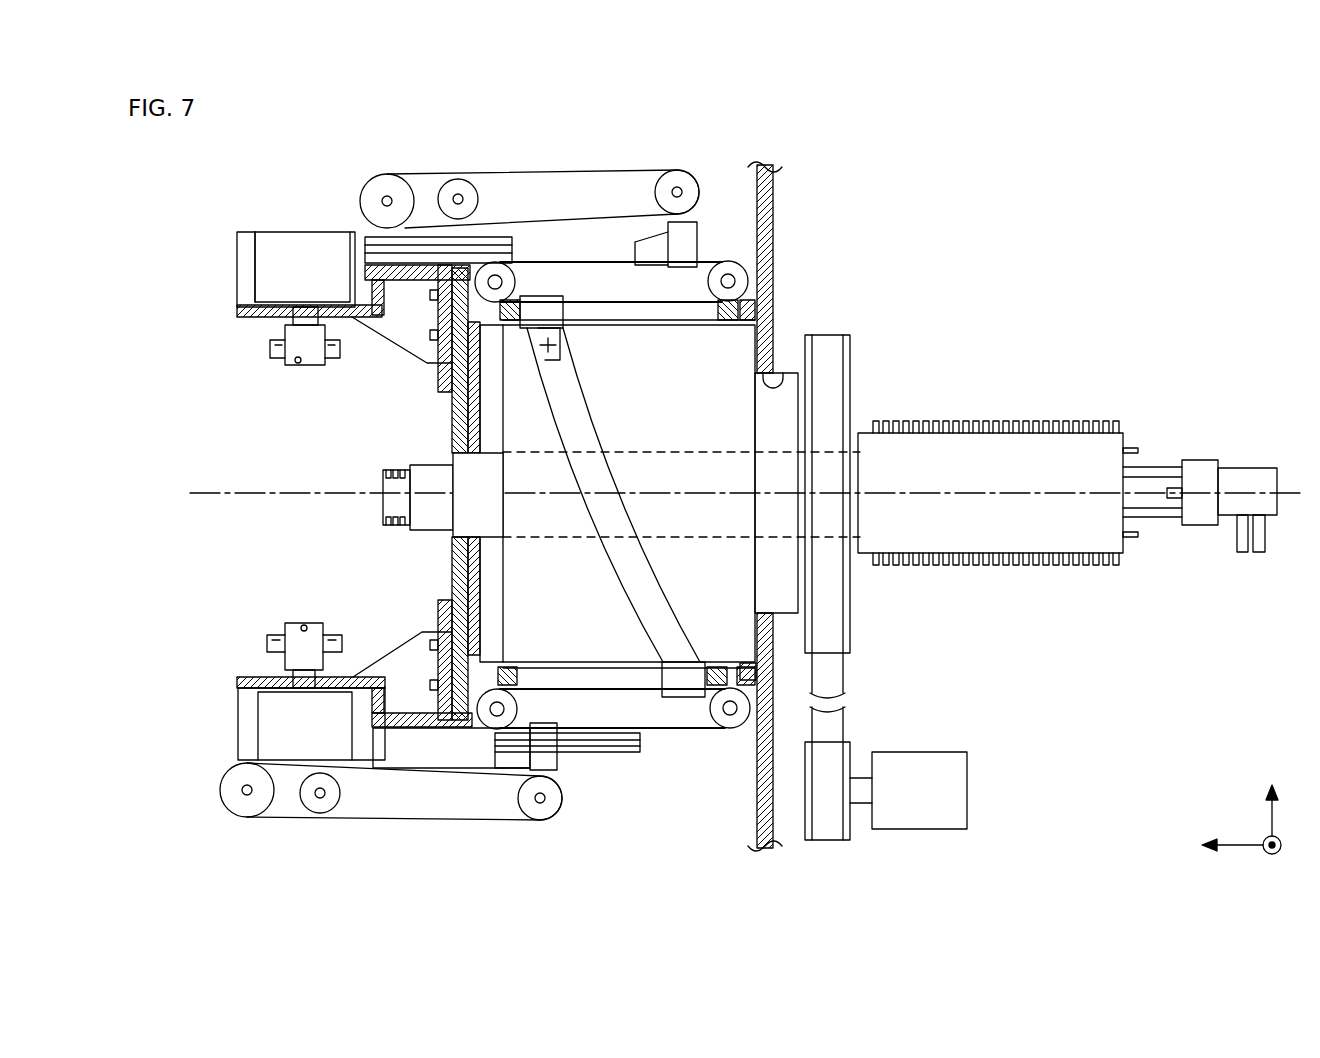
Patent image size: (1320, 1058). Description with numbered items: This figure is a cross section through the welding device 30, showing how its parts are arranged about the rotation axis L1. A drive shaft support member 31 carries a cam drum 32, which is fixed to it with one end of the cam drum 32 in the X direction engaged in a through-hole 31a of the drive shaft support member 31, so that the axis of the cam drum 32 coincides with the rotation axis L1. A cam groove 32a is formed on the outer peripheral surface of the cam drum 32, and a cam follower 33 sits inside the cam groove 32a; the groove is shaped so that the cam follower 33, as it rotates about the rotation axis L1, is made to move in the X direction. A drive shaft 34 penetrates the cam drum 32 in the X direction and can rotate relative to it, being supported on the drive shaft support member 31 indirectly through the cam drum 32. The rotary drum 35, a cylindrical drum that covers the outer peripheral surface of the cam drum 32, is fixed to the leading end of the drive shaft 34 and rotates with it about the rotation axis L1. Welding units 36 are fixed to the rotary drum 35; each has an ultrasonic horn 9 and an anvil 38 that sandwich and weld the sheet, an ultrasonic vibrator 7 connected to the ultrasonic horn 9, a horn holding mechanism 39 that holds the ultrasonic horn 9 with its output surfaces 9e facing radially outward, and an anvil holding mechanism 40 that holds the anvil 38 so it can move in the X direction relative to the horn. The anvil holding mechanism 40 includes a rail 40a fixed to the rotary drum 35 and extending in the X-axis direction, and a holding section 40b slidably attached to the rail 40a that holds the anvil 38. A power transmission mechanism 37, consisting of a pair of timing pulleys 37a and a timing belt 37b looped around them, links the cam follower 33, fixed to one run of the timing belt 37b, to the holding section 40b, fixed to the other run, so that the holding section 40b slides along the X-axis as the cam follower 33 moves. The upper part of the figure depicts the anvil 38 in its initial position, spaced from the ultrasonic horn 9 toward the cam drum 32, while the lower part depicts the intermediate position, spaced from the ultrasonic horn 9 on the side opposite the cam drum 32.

The welding device 30 is at (1118, 133).
The drive shaft support member 31 is at (778, 190).
The through-hole 31a is at (792, 376).
The cam drum 32 is at (735, 417).
The cam groove 32a is at (590, 372).
The cam follower 33 is at (547, 362).
The drive shaft 34 is at (636, 450).
The rotary drum 35 is at (415, 563).
The welding unit 36 is at (482, 133).
The power transmission mechanism 37 is at (742, 230).
The timing pulley 37a is at (507, 278).
The timing belt 37b is at (600, 300).
The anvil 38 is at (386, 172).
The horn holding mechanism 39 is at (226, 270).
The anvil holding mechanism 40 is at (692, 157).
The rail 40a is at (380, 247).
The holding section 40b is at (606, 167).
The ultrasonic horn 9 is at (286, 243).
The output surface 9e is at (262, 228).
The ultrasonic vibrator 7 is at (292, 370).
The rotation axis L1 is at (230, 492).